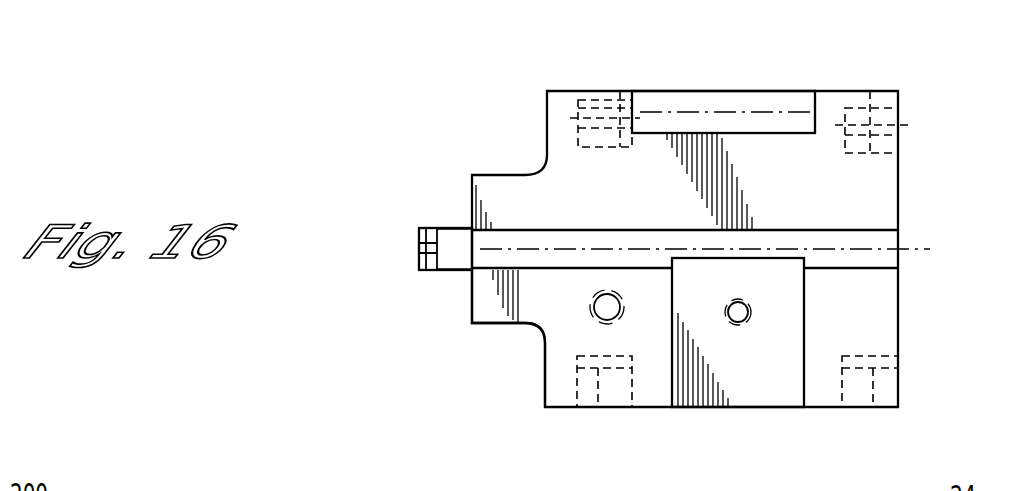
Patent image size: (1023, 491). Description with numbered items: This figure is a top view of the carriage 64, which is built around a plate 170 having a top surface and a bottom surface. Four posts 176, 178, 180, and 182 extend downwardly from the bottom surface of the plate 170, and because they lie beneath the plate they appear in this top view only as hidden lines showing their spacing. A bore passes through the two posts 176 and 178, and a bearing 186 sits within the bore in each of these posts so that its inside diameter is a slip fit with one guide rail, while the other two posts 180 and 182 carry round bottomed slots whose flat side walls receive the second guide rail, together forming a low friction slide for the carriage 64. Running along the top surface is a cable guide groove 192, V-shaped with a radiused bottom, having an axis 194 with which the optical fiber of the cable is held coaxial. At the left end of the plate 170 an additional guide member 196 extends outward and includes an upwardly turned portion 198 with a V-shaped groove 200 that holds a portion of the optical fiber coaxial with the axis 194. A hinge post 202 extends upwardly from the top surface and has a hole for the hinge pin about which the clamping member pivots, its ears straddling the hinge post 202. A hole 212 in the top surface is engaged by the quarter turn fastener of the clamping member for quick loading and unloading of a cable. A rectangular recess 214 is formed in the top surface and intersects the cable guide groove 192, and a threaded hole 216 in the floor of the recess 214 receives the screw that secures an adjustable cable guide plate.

The carriage 64 is at (477, 137).
The plate 170 is at (541, 327).
The post 176 is at (605, 100).
The post 178 is at (861, 110).
The post 180 is at (608, 395).
The post 182 is at (858, 393).
The bearing 186 is at (620, 110).
The cable guide groove 192 is at (597, 243).
The axis 194 is at (520, 248).
The guide member 196 is at (450, 272).
The upwardly turned portion 198 is at (427, 272).
The V-shaped groove 200 is at (421, 245).
The hinge post 202 is at (731, 100).
The hole 212 is at (612, 310).
The rectangular recess 214 is at (757, 388).
The threaded hole 216 is at (738, 316).